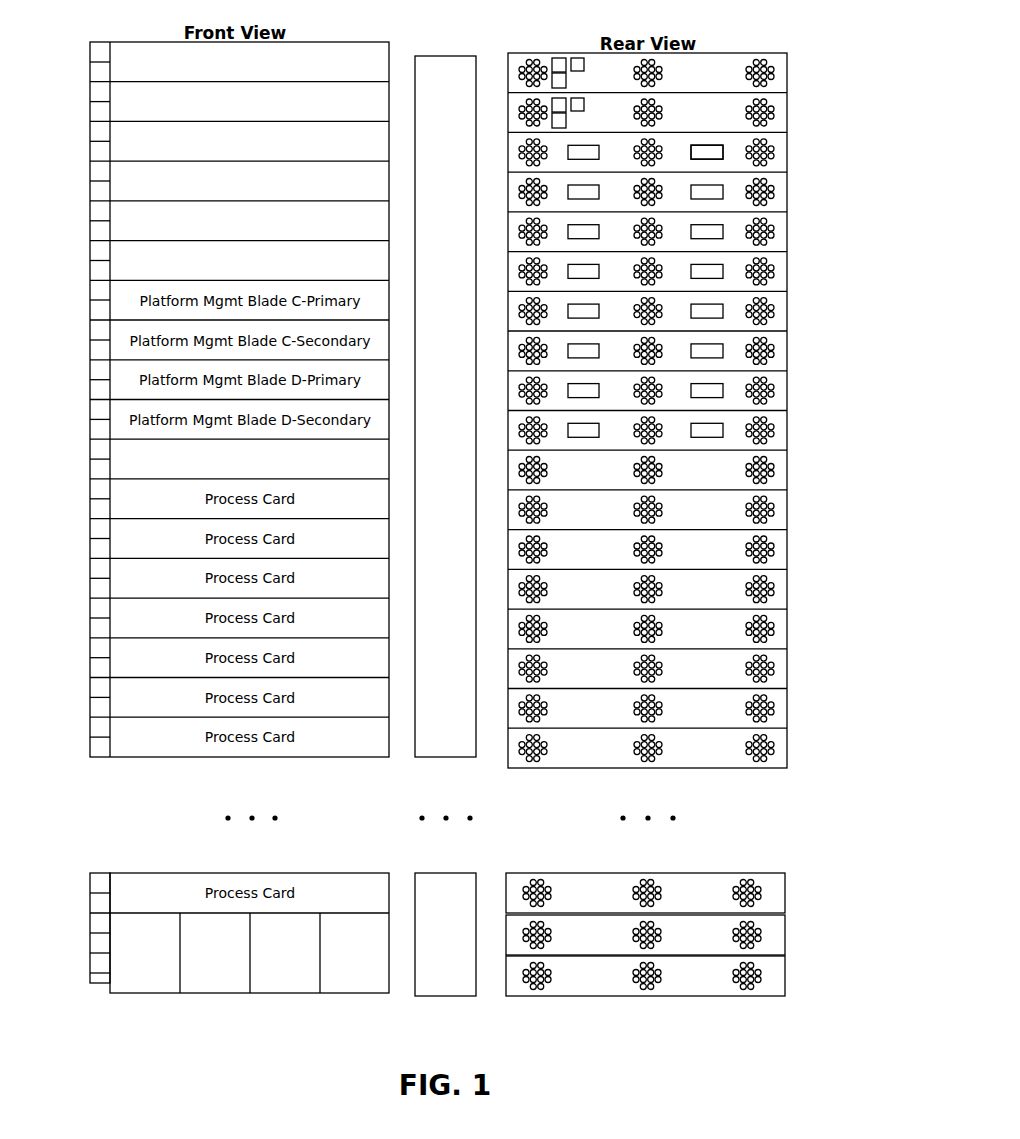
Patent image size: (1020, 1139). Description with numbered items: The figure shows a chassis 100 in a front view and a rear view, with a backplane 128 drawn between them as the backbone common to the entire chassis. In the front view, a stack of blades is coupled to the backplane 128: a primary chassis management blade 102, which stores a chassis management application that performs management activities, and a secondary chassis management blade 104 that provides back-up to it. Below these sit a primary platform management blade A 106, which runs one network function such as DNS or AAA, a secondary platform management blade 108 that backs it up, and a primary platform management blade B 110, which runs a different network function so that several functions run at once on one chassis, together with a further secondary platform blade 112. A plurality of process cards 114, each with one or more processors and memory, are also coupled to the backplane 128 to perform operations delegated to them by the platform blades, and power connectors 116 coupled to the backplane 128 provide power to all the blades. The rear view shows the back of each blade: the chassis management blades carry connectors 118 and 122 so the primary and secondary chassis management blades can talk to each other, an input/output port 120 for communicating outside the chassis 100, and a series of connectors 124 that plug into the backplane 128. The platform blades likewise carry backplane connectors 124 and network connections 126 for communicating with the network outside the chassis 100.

The chassis 100 is at (812, 393).
The primary chassis management blade 102 is at (110, 62).
The secondary chassis management blade 104 is at (110, 102).
The primary platform management blade A 106 is at (110, 141).
The secondary platform management blade 108 is at (110, 181).
The primary platform management blade B 110 is at (110, 221).
The platform management blade B secondary 112 is at (110, 260).
The process cards 114 is at (110, 459).
The power connectors 116 is at (110, 913).
The primary chassis management blade connector 118 is at (551, 55).
The input/output port 120 is at (581, 55).
The primary chassis management blade connector 122 is at (567, 75).
The connectors 124 is at (772, 78).
The network connections 126 is at (723, 156).
The backplane 128 is at (446, 56).